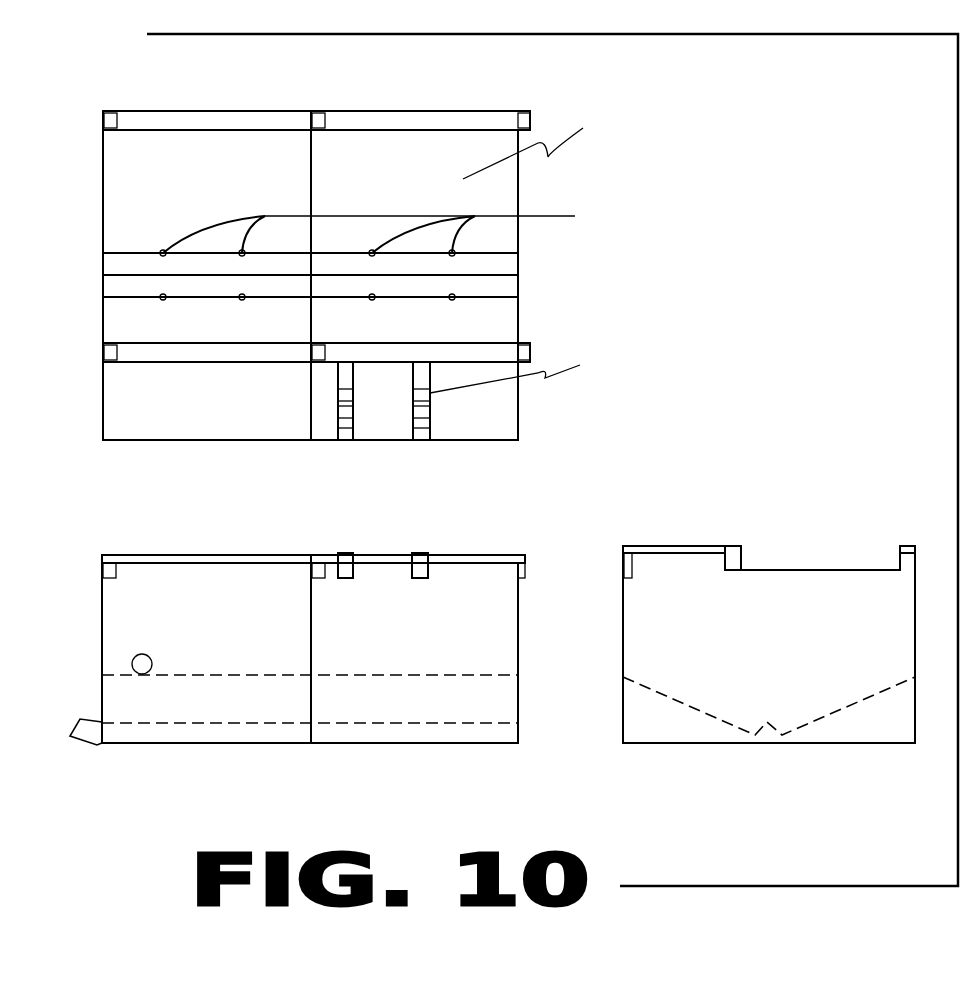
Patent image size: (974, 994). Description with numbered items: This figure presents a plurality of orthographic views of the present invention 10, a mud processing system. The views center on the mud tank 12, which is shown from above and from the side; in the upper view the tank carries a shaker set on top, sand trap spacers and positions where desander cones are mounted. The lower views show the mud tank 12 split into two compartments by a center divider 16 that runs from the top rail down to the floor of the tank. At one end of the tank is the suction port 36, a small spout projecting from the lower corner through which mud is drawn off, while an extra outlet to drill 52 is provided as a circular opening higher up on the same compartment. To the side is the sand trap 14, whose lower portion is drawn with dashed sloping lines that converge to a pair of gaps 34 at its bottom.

The present invention 10 is at (852, 186).
The mud tank 12 is at (385, 442).
The sand trap 14 is at (769, 641).
The center divider 16 is at (311, 700).
The gaps 34 is at (753, 738).
The suction port 36 is at (88, 740).
The extra outlet to drill 52 is at (142, 667).